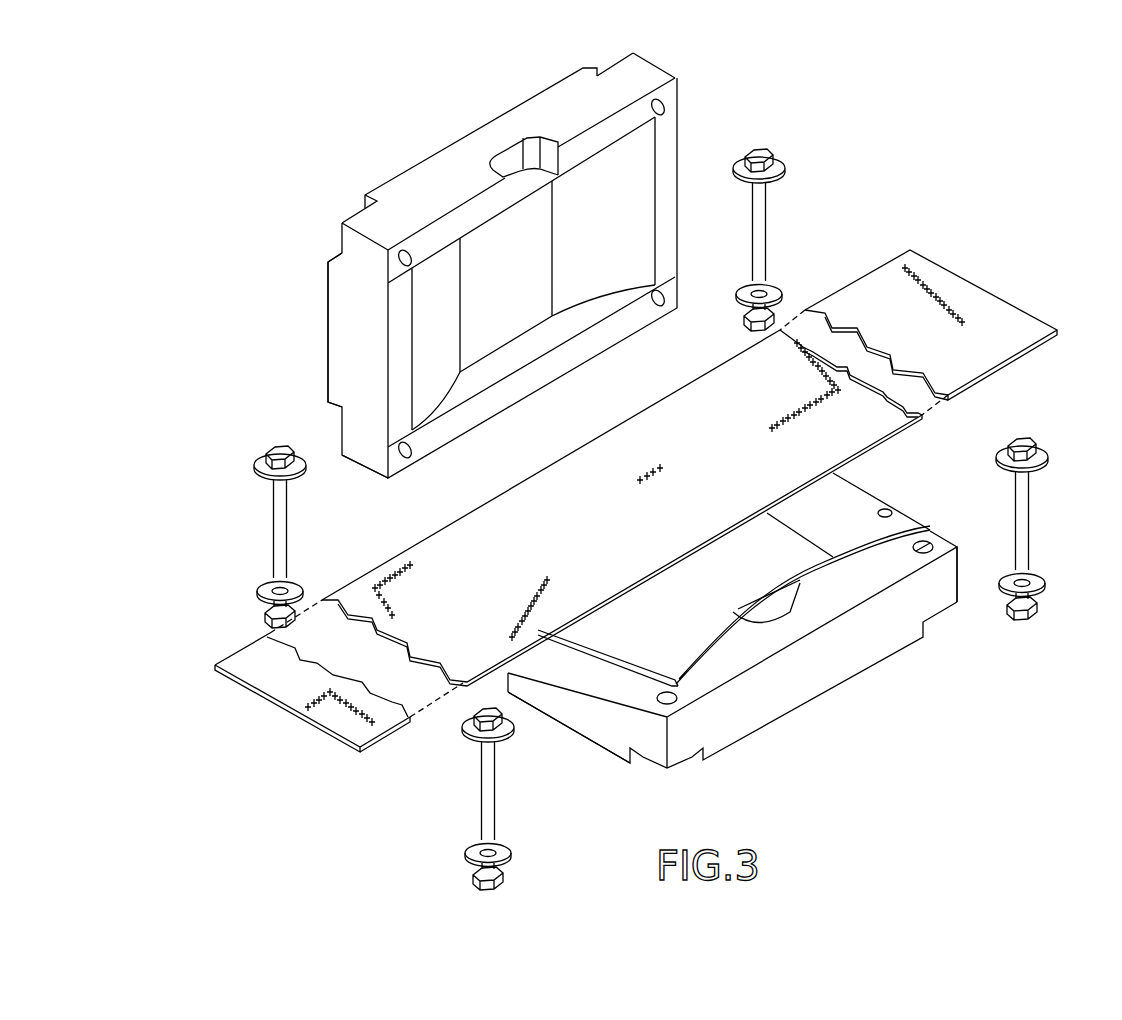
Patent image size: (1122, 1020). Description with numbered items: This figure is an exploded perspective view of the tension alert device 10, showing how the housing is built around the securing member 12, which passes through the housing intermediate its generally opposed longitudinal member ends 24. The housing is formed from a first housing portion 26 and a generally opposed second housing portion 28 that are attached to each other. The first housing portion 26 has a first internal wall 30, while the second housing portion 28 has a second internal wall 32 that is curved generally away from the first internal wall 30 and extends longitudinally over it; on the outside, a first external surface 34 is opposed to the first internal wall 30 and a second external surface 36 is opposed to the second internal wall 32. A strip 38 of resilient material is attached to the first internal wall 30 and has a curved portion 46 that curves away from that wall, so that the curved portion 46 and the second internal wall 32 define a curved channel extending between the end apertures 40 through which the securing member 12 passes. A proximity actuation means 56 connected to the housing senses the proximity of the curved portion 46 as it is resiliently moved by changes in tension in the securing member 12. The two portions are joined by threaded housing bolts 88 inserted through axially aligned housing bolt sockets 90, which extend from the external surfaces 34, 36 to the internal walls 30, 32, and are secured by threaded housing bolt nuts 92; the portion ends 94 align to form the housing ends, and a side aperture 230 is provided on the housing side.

The device 10 is at (241, 201).
The securing member 12 is at (545, 485).
The longitudinal member ends 24 is at (1005, 320).
The first housing portion 26 is at (957, 585).
The second housing portion 28 is at (345, 239).
The first internal wall 30 is at (848, 530).
The second internal wall 32 is at (583, 207).
The first external surface 34 is at (765, 742).
The second external surface 36 is at (409, 150).
The strip 38 is at (630, 672).
The end apertures 40 is at (433, 293).
The curved portion 46 is at (838, 512).
The proximity actuation means 56 is at (790, 615).
The housing bolts 88 is at (1023, 523).
The housing bolt sockets 90 is at (665, 107).
The housing bolt nuts 92 is at (1036, 615).
The portion ends 94 is at (362, 433).
The side aperture 230 is at (520, 165).